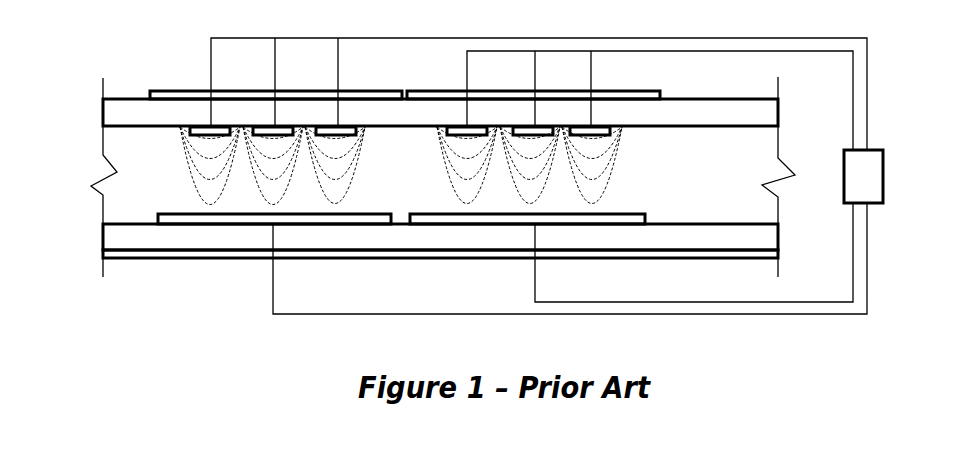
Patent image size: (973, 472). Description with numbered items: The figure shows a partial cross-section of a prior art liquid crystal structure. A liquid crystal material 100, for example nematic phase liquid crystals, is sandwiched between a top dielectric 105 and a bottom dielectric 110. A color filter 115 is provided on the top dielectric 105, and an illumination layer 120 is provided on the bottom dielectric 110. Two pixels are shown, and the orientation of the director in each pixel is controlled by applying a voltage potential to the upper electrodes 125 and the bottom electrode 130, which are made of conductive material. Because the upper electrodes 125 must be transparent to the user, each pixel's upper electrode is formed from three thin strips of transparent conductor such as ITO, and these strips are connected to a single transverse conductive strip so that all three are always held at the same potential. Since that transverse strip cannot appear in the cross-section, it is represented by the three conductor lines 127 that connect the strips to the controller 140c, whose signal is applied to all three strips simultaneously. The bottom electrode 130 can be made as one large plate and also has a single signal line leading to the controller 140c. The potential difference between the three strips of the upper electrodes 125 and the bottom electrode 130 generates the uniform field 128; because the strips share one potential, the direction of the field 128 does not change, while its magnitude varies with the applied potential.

The liquid crystal material 100 is at (712, 186).
The top dielectric 105 is at (703, 99).
The bottom dielectric 110 is at (706, 224).
The color filter 115 is at (630, 91).
The illumination layer 120 is at (768, 252).
The upper electrodes 125 is at (264, 126).
The conductor lines 127 is at (318, 38).
The uniform field 128 is at (171, 189).
The bottom electrode 130 is at (362, 214).
The controller 140c is at (880, 150).